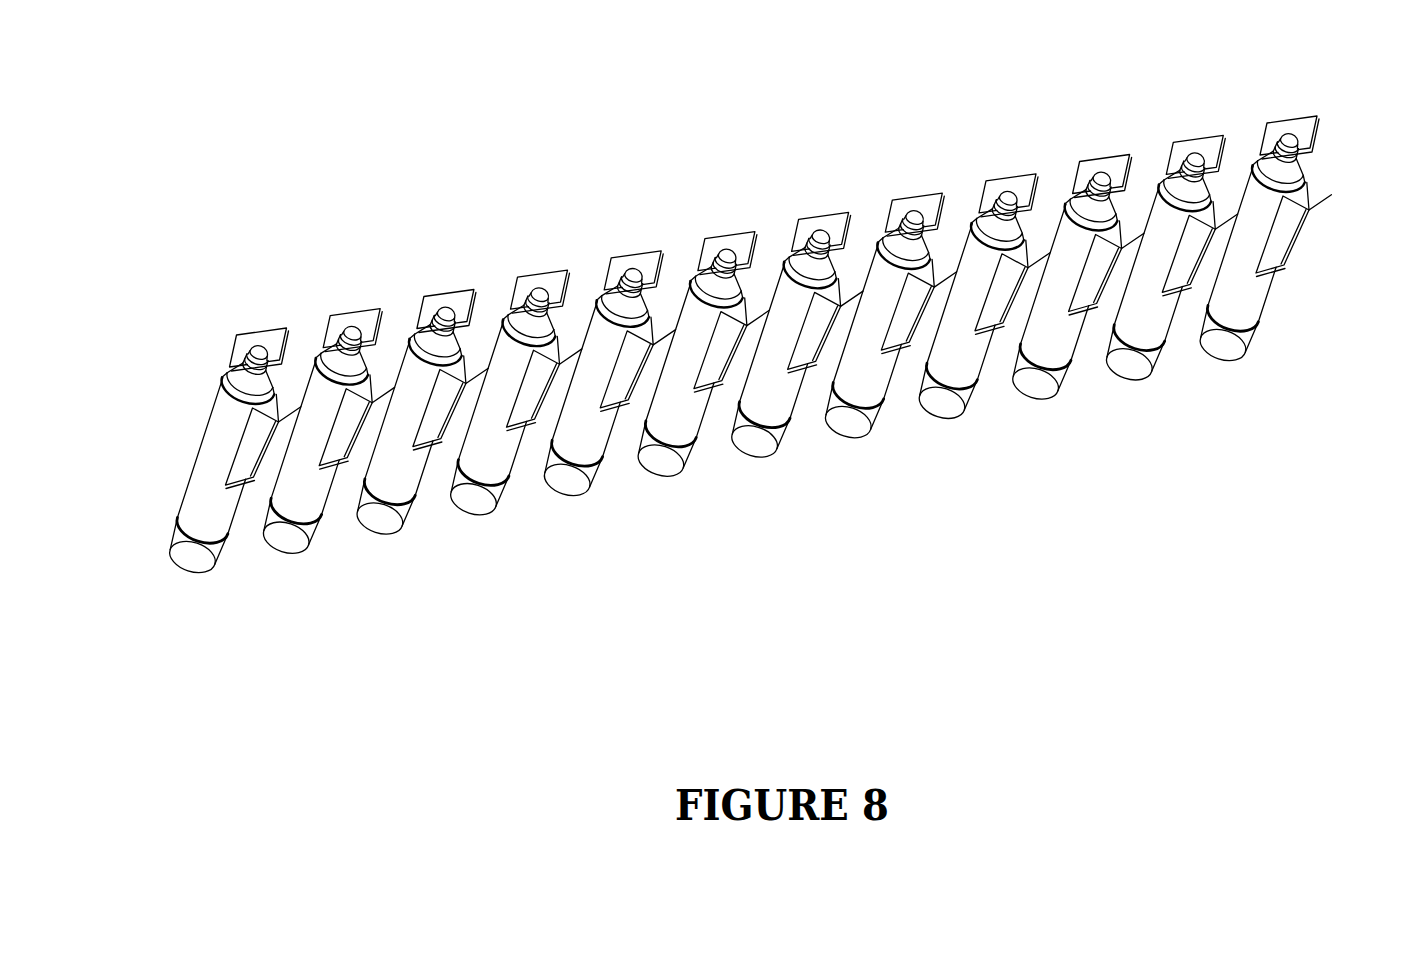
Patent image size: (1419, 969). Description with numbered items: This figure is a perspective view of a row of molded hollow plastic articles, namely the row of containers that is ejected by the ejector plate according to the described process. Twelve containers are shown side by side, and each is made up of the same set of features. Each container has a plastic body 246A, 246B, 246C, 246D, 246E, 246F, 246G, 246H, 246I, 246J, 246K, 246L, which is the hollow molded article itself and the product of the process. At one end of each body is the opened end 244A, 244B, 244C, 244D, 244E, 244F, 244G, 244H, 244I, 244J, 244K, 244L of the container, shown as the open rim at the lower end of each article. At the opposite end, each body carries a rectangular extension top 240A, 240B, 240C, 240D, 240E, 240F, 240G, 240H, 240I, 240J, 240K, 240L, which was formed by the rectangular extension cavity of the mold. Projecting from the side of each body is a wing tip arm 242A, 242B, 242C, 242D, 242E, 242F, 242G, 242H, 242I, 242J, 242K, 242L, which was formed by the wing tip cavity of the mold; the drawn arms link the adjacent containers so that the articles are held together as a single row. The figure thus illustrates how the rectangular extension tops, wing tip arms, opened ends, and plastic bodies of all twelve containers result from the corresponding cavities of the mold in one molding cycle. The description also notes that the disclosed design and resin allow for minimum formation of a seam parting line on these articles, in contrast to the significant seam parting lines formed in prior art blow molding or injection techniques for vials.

The rectangular extension top 240A is at (247, 342).
The wing tip arm 242A is at (242, 478).
The opened end 244A is at (190, 560).
The plastic body 246A is at (222, 427).
The rectangular extension top 240B is at (348, 312).
The wing tip arm 242B is at (337, 462).
The opened end 244B is at (288, 542).
The plastic body 246B is at (305, 368).
The rectangular extension top 240C is at (452, 291).
The wing tip arm 242C is at (436, 446).
The opened end 244C is at (382, 518).
The plastic body 246C is at (408, 363).
The rectangular extension top 240D is at (530, 285).
The wing tip arm 242D is at (532, 435).
The opened end 244D is at (482, 497).
The plastic body 246D is at (518, 340).
The rectangular extension top 240E is at (632, 256).
The wing tip arm 242E is at (622, 392).
The opened end 244E is at (568, 487).
The plastic body 246E is at (597, 300).
The rectangular extension top 240F is at (740, 237).
The wing tip arm 242F is at (718, 382).
The opened end 244F is at (664, 467).
The plastic body 246F is at (680, 295).
The rectangular extension top 240G is at (822, 231).
The wing tip arm 242G is at (814, 366).
The opened end 244G is at (756, 447).
The plastic body 246G is at (788, 280).
The rectangular extension top 240H is at (913, 208).
The wing tip arm 242H is at (895, 352).
The opened end 244H is at (854, 432).
The plastic body 246H is at (886, 272).
The rectangular extension top 240I is at (1006, 181).
The wing tip arm 242I is at (997, 333).
The opened end 244I is at (946, 410).
The plastic body 246I is at (968, 257).
The rectangular extension top 240J is at (1120, 154).
The wing tip arm 242J is at (1096, 309).
The opened end 244J is at (1048, 388).
The plastic body 246J is at (1057, 232).
The rectangular extension top 240K is at (1197, 136).
The wing tip arm 242K is at (1190, 290).
The opened end 244K is at (1142, 370).
The plastic body 246K is at (1172, 198).
The rectangular extension top 240L is at (1308, 115).
The wing tip arm 242L is at (1223, 237).
The opened end 244L is at (1223, 347).
The plastic body 246L is at (1303, 233).